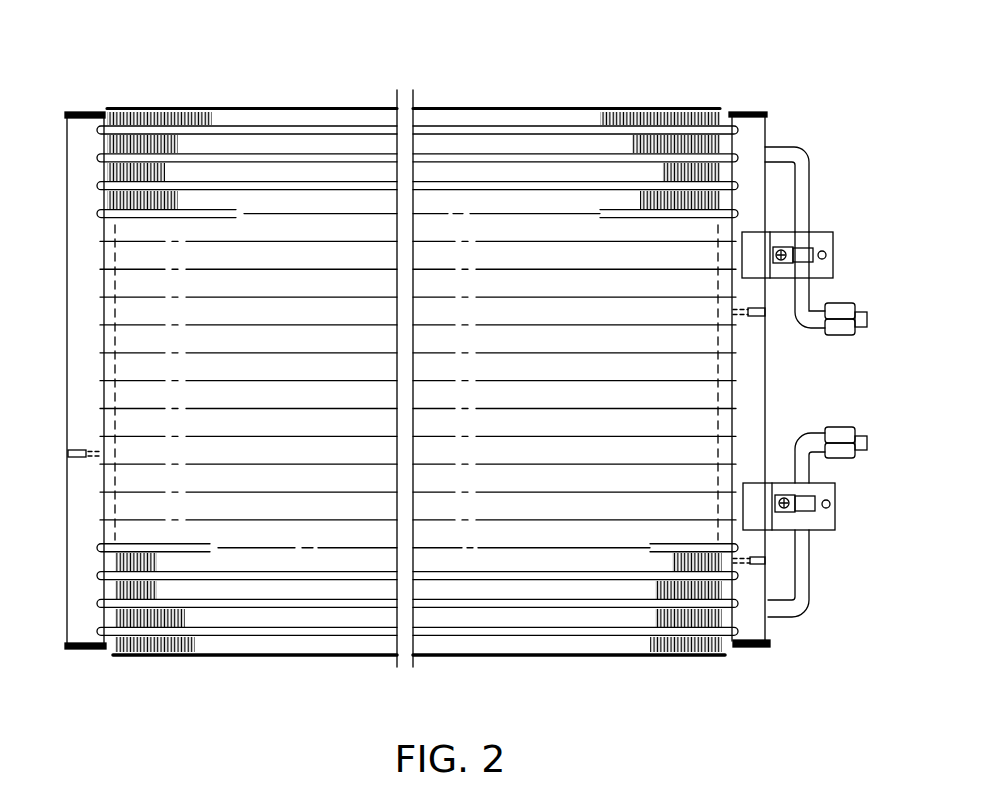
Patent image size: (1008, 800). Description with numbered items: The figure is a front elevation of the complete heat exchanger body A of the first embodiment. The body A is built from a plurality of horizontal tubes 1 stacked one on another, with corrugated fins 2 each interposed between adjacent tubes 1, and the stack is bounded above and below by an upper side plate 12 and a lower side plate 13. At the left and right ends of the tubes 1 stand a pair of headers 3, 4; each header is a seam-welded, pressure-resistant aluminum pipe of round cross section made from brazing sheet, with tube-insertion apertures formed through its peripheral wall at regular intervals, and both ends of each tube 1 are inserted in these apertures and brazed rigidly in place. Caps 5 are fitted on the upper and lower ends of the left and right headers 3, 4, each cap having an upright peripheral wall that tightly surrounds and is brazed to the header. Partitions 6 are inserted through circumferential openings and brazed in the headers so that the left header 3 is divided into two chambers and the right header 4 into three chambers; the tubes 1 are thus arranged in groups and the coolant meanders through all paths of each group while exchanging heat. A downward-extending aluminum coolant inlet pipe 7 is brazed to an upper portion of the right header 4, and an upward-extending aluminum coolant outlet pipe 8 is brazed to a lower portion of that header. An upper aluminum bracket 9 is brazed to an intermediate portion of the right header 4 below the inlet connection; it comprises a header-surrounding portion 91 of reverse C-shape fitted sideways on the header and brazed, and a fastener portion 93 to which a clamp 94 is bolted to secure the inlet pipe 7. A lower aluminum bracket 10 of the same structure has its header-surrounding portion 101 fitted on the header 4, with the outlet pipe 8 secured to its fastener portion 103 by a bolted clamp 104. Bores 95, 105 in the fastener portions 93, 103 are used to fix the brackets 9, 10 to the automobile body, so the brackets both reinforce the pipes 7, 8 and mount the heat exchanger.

The heat exchanger body A is at (601, 97).
The horizontal tubes 1 is at (495, 160).
The corrugated fins 2 is at (177, 148).
The left header 3 is at (66, 283).
The right header 4 is at (755, 385).
The caps 5 is at (83, 112).
The partitions 6 is at (66, 460).
The coolant inlet pipe 7 is at (793, 153).
The coolant outlet pipe 8 is at (790, 615).
The upper aluminum bracket 9 is at (831, 270).
The lower aluminum bracket 10 is at (818, 527).
The upper side plate 12 is at (345, 108).
The lower side plate 13 is at (340, 657).
The header-surrounding portion 91 is at (757, 232).
The fastener portion 93 is at (830, 228).
The clamp 94 is at (806, 253).
The bore 95 is at (827, 257).
The header-surrounding portion 101 is at (757, 494).
The fastener portion 103 is at (828, 490).
The clamp 104 is at (808, 502).
The bore 105 is at (831, 509).